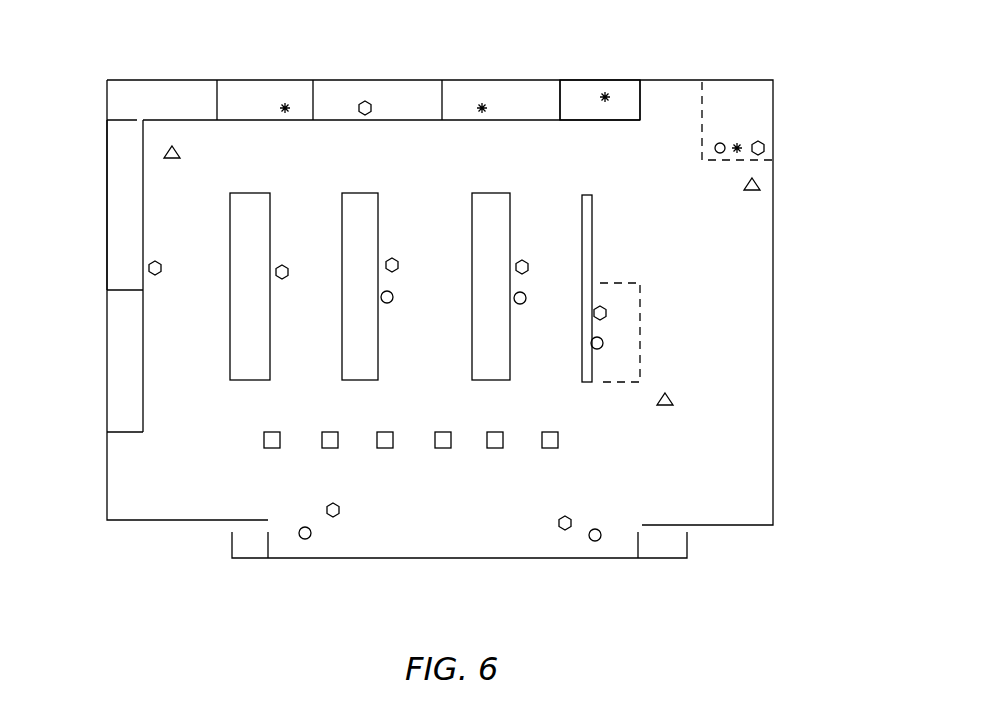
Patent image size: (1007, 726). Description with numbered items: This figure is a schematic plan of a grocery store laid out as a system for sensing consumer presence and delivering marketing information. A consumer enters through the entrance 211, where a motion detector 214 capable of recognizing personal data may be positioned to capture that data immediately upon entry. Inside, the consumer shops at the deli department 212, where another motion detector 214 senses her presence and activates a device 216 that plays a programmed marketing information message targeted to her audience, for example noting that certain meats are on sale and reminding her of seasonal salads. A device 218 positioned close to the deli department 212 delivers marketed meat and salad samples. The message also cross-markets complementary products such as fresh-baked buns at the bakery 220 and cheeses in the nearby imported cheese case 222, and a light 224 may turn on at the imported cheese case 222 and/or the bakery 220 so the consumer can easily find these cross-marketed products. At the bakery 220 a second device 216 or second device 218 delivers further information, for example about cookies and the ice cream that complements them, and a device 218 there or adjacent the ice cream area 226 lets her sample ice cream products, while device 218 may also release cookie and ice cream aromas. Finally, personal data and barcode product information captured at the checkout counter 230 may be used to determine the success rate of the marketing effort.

The entrance 211 is at (245, 543).
The deli department 212 is at (620, 342).
The motion detector 214 is at (721, 143).
The device capable of delivering a marketing information message 216 is at (362, 99).
The device 218 is at (425, 160).
The bakery 220 is at (738, 102).
The imported cheese case 222 is at (577, 97).
The light 224 is at (605, 97).
The ice cream area 226 is at (120, 212).
The checkout counter 230 is at (443, 448).